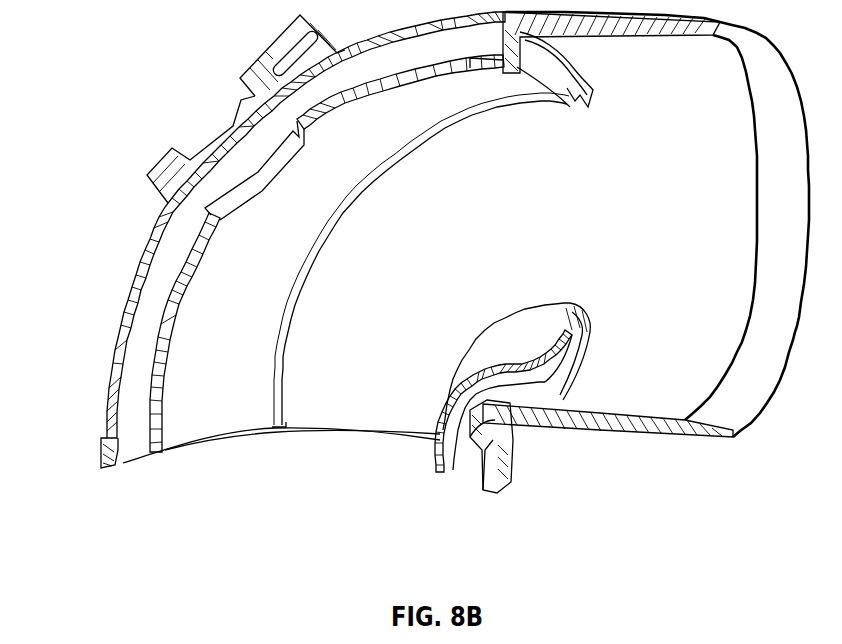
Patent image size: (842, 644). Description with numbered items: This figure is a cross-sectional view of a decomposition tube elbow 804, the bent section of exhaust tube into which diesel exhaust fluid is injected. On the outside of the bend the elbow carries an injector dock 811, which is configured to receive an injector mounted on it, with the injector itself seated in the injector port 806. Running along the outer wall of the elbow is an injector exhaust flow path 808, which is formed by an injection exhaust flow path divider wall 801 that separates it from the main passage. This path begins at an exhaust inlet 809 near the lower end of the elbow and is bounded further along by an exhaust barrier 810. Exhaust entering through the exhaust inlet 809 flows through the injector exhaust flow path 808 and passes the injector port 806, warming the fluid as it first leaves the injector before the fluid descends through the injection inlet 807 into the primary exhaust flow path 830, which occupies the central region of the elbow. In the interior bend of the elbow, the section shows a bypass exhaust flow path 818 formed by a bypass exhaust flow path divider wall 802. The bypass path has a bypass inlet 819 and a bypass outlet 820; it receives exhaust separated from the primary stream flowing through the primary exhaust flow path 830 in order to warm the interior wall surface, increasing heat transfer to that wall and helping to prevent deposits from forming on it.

The injection exhaust flow path divider wall 801 is at (207, 390).
The bypass exhaust flow path divider wall 802 is at (497, 370).
The decomposition tube elbow 804 is at (127, 236).
The injector port 806 is at (227, 137).
The injection inlet 807 is at (250, 187).
The injector exhaust flow path 808 is at (140, 327).
The exhaust inlet 809 is at (127, 465).
The exhaust barrier 810 is at (572, 97).
The injector dock 811 is at (272, 72).
The bypass exhaust flow path 818 is at (540, 430).
The bypass inlet 819 is at (463, 470).
The bypass outlet 820 is at (573, 343).
The primary exhaust flow path 830 is at (320, 387).